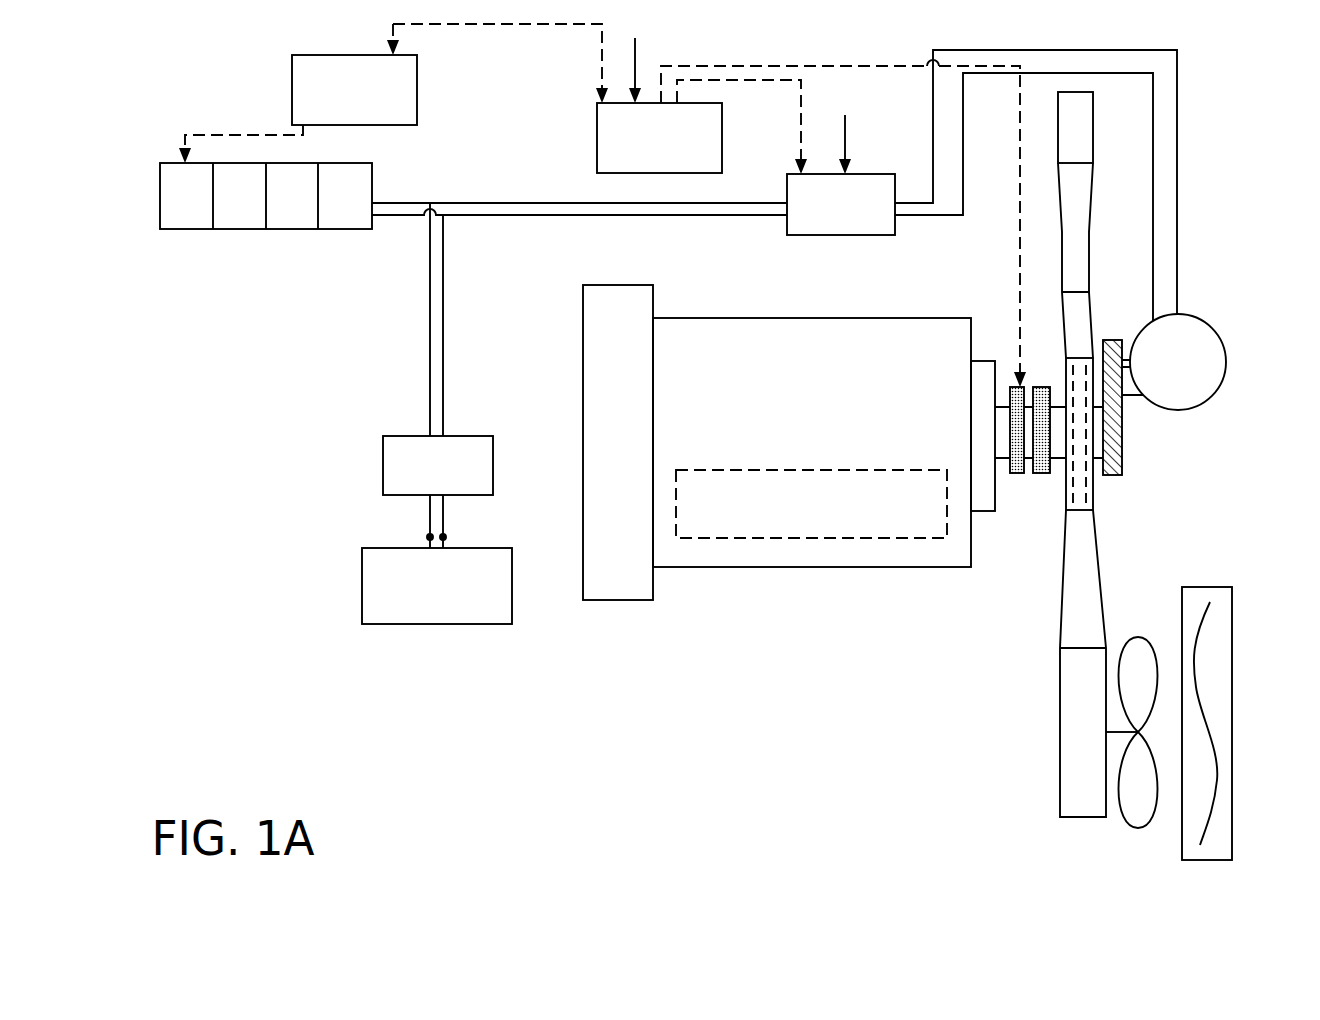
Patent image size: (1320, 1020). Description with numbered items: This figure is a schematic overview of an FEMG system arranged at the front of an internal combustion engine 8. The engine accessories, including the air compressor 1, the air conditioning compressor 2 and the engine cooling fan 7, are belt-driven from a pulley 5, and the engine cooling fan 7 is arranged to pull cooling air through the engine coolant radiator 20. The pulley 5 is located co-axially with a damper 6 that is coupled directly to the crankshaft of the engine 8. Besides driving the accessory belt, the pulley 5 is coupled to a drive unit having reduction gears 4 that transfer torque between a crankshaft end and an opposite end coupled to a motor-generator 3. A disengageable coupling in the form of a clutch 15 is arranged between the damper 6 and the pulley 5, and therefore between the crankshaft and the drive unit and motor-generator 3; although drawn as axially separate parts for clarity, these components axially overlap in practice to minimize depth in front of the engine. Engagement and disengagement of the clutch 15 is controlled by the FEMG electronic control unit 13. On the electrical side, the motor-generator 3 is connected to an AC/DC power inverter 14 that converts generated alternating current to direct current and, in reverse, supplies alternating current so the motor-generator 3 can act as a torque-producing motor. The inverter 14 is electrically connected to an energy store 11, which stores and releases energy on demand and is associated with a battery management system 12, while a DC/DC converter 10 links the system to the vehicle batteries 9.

The air compressor 1 is at (1095, 130).
The air conditioning compressor 2 is at (1090, 263).
The motor-generator 3 is at (1227, 360).
The drive unit gears 4 is at (1122, 442).
The pulley 5 is at (1093, 487).
The damper 6 is at (983, 511).
The engine cooling fan 7 is at (1060, 772).
The engine 8 is at (741, 567).
The vehicle batteries 9 is at (400, 624).
The DC/DC converter 10 is at (383, 467).
The energy store 11 is at (160, 197).
The battery management system 12 is at (292, 90).
The FEMG electronic control unit 13 is at (659, 90).
The AC/DC power inverter 14 is at (841, 160).
The clutch 15 is at (1024, 482).
The engine coolant radiator 20 is at (1233, 658).